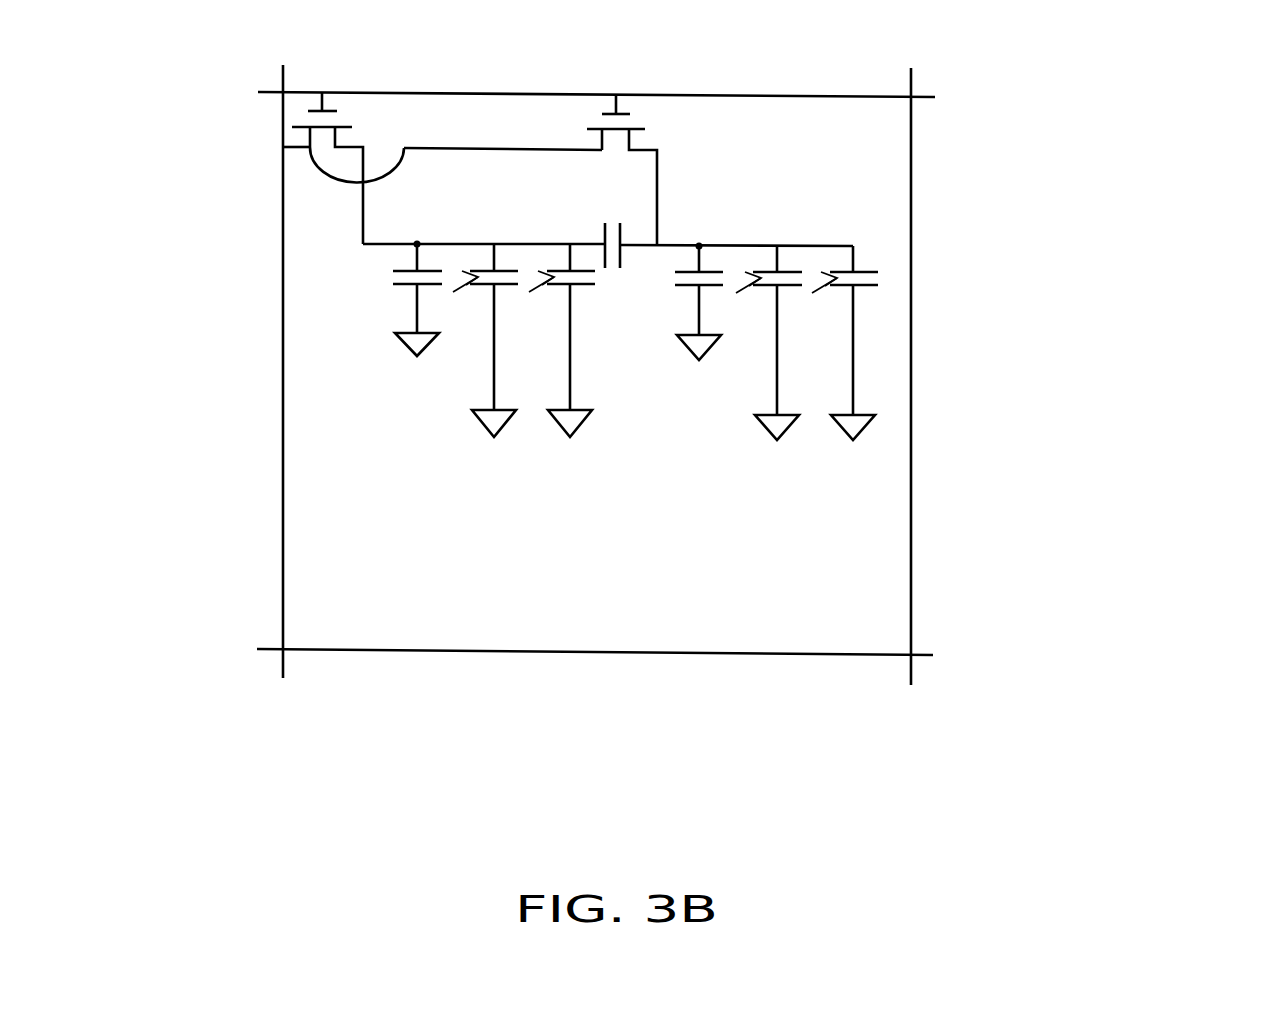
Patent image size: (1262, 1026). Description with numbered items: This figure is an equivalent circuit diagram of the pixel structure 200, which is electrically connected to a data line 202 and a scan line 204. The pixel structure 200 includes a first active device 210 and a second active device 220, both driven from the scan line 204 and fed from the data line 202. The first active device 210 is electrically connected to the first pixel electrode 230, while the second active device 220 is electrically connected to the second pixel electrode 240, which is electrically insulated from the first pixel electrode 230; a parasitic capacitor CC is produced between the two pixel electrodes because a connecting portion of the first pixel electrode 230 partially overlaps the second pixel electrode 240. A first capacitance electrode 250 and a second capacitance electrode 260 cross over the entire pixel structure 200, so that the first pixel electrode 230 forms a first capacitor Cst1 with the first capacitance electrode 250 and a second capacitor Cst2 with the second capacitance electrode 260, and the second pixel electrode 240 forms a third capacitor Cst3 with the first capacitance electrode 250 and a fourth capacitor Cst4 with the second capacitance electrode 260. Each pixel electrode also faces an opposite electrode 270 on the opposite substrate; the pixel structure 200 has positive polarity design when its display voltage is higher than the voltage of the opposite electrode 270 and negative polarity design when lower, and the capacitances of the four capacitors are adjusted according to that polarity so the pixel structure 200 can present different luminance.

The pixel structure 200 is at (1181, 767).
The data line 202 is at (283, 322).
The scan line 204 is at (672, 95).
The first active device 210 is at (349, 117).
The second active device 220 is at (595, 122).
The first pixel electrode 230 is at (417, 244).
The second pixel electrode 240 is at (699, 246).
The first capacitance electrode 250 is at (644, 365).
The second capacitance electrode 260 is at (707, 365).
The opposite electrode 270 is at (575, 329).